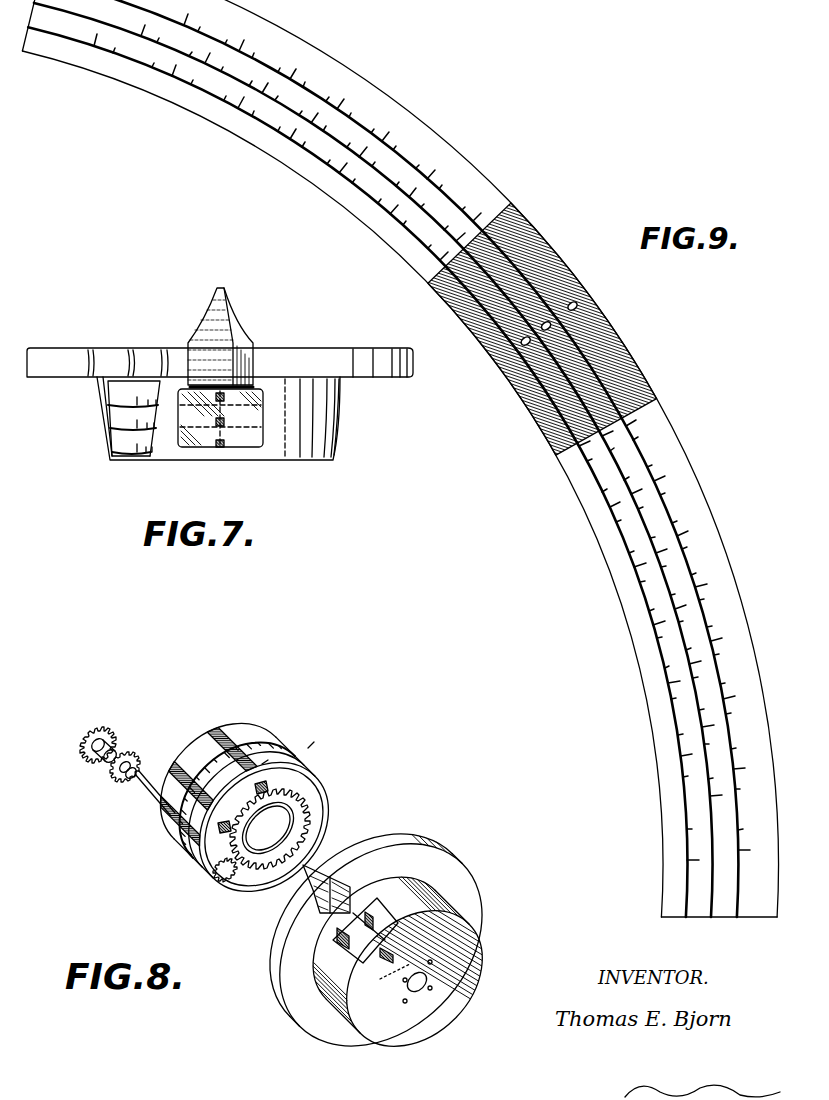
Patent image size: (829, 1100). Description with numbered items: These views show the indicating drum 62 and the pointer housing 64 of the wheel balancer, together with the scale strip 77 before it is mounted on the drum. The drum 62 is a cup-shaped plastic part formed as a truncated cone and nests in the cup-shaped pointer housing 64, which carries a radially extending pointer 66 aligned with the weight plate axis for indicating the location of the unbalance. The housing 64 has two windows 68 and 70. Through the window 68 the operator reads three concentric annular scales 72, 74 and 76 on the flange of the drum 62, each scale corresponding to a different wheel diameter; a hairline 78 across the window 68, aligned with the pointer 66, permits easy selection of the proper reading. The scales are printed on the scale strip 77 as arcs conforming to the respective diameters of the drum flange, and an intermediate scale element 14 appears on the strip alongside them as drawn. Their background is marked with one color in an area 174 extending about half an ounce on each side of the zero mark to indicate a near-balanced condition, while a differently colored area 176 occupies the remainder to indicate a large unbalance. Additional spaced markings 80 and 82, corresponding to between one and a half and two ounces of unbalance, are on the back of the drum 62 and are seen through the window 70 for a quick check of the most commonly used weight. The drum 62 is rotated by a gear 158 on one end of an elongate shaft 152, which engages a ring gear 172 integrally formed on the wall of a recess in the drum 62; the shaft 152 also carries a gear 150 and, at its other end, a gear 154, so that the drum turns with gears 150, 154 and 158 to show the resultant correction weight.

In FIG. 9, the intermediate scale line 14 is at (670, 610).
In FIG. 7, the indicating drum 62 is at (130, 377).
In FIG. 8, the indicating drum 62 is at (230, 896).
In FIG. 7, the pointer housing 64 is at (340, 413).
In FIG. 8, the pointer housing 64 is at (433, 834).
In FIG. 7, the pointer 66 is at (235, 319).
In FIG. 8, the pointer 66 is at (309, 868).
In FIG. 7, the window 68 is at (243, 443).
In FIG. 8, the window 68 is at (390, 915).
In FIG. 8, the window 70 is at (386, 963).
In FIG. 9, the annular scale 72 is at (676, 728).
In FIG. 7, the annular scale 72 is at (117, 456).
In FIG. 7, the annular scale 74 is at (115, 431).
In FIG. 9, the annular scale 76 is at (700, 584).
In FIG. 7, the annular scale 76 is at (113, 405).
In FIG. 9, the scale strip 77 is at (560, 488).
In FIG. 7, the scale strip 77 is at (78, 435).
In FIG. 8, the scale strip 77 is at (314, 743).
In FIG. 7, the hairline 78 is at (217, 433).
In FIG. 8, the hairline 78 is at (352, 952).
In FIG. 8, the spaced marking 80 is at (224, 830).
In FIG. 8, the spaced marking 82 is at (265, 762).
In FIG. 8, the gear 150 is at (133, 758).
In FIG. 8, the elongate shaft 152 is at (150, 802).
In FIG. 8, the gear 154 is at (120, 727).
In FIG. 8, the gear 158 is at (203, 882).
In FIG. 8, the ring gear 172 is at (300, 798).
In FIG. 9, the colored area 174 is at (600, 350).
In FIG. 9, the colored area 176 is at (471, 190).